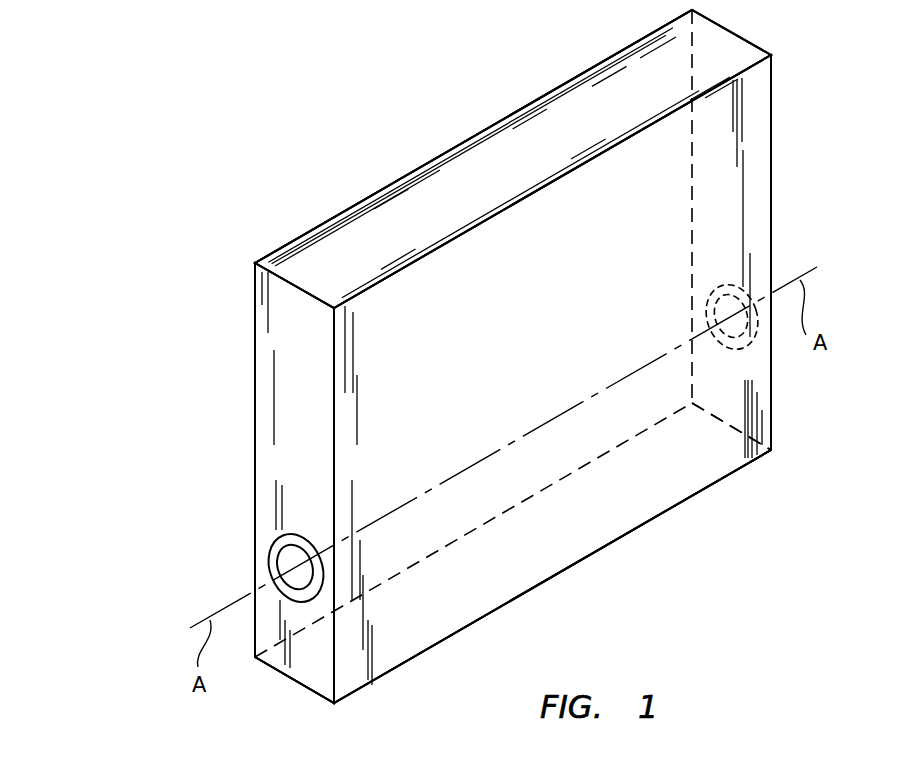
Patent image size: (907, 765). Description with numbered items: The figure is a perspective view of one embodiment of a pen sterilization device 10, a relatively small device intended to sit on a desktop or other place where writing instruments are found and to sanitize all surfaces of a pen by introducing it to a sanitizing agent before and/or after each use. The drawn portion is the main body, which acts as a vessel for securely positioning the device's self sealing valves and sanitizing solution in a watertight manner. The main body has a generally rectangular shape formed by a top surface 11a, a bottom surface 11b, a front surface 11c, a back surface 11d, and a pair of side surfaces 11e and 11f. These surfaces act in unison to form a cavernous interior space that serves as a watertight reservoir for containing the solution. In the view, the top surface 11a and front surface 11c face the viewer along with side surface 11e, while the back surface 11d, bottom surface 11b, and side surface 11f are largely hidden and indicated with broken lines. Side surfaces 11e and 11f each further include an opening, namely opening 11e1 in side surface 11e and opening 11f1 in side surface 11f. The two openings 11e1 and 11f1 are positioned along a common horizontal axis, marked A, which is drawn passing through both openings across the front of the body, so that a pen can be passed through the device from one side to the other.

The pen sterilization device 10 is at (372, 123).
The top surface 11a is at (456, 216).
The bottom surface 11b is at (552, 552).
The front surface 11c is at (477, 400).
The back surface 11d is at (330, 253).
The side surface 11e is at (283, 400).
The opening 11e1 is at (277, 560).
The side surface 11f is at (733, 137).
The opening 11f1 is at (712, 290).